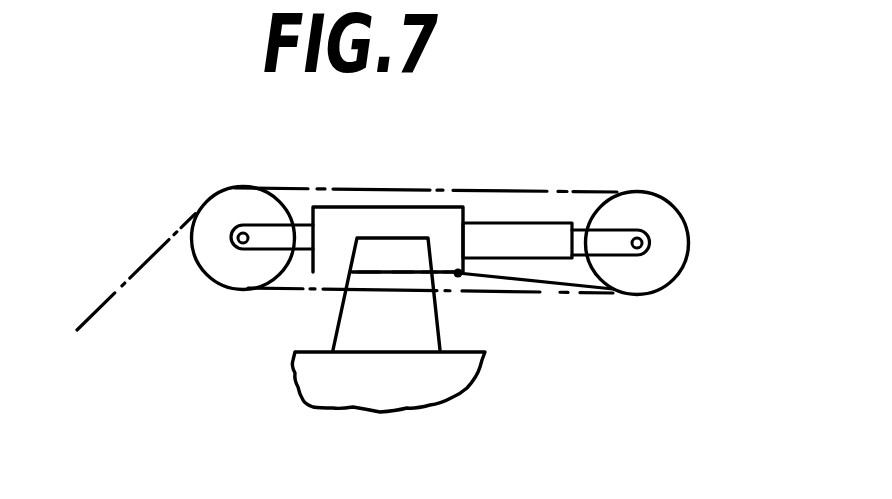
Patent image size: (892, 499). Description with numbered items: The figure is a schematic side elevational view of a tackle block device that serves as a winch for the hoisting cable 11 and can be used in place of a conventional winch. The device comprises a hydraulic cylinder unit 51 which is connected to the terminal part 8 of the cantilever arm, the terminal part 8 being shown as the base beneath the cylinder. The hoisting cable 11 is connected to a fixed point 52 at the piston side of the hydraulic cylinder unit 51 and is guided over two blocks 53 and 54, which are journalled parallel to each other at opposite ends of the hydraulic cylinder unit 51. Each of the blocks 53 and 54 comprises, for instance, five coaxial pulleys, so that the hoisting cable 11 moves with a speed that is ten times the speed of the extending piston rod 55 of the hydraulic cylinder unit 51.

The terminal part 8 is at (410, 392).
The hoisting cable 11 is at (106, 302).
The hydraulic cylinder unit 51 is at (447, 207).
The fixed point 52 is at (458, 275).
The block 53 is at (223, 208).
The block 54 is at (662, 220).
The piston rod 55 is at (540, 248).